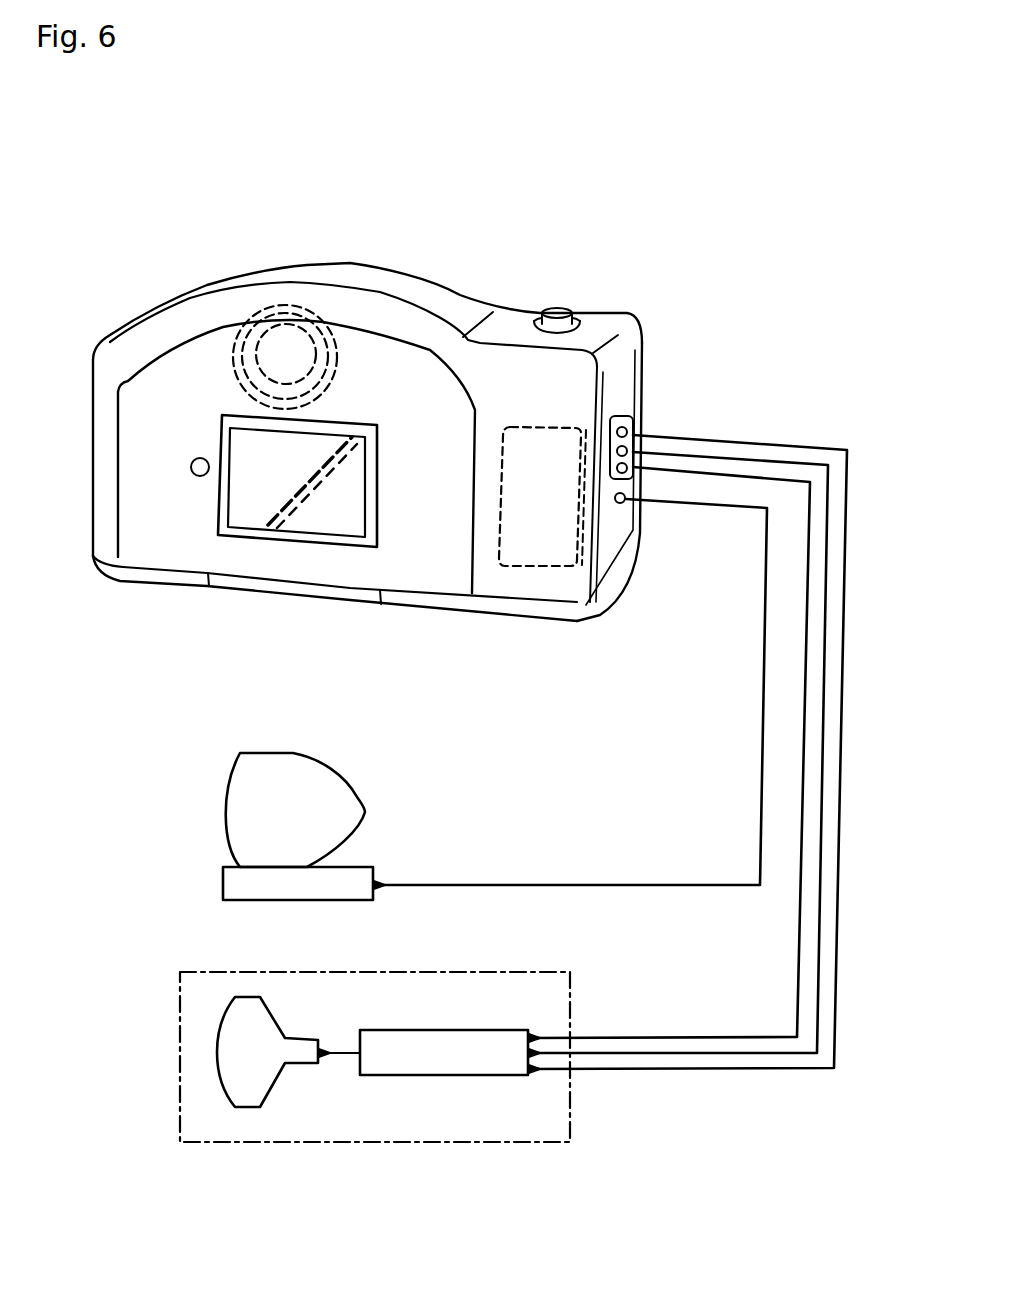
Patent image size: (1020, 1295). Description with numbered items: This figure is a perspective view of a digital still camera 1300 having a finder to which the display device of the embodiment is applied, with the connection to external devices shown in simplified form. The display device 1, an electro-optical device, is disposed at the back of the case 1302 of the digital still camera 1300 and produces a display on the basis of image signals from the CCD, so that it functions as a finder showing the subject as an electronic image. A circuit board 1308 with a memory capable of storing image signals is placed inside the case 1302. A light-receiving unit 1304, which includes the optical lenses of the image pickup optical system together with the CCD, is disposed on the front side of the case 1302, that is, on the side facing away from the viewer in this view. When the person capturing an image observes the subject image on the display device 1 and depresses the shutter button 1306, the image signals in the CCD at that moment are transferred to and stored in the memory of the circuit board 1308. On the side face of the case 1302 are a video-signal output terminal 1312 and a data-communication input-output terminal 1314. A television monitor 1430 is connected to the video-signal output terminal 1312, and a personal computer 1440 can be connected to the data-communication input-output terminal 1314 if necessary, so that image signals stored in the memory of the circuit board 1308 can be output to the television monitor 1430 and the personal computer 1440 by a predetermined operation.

The digital still camera 1300 is at (463, 210).
The case 1302 is at (112, 381).
The light-receiving unit 1304 is at (328, 308).
The shutter button 1306 is at (557, 308).
The circuit board 1308 is at (530, 545).
The video-signal output terminal 1312 is at (633, 421).
The data-communication input-output terminal 1314 is at (621, 504).
The display device 1 is at (330, 500).
The personal computer 1440 is at (231, 775).
The television monitor 1430 is at (180, 1038).